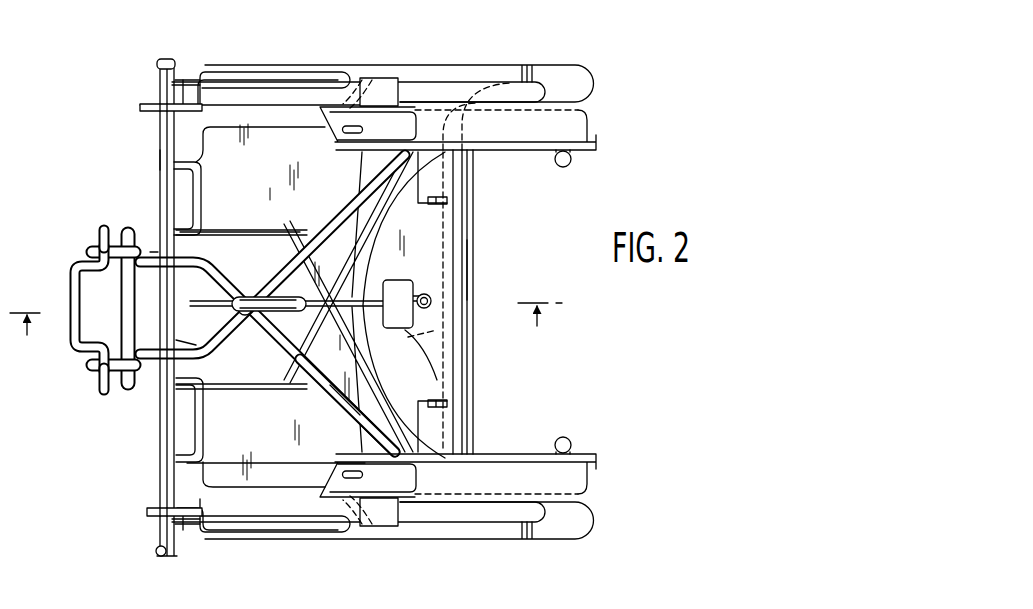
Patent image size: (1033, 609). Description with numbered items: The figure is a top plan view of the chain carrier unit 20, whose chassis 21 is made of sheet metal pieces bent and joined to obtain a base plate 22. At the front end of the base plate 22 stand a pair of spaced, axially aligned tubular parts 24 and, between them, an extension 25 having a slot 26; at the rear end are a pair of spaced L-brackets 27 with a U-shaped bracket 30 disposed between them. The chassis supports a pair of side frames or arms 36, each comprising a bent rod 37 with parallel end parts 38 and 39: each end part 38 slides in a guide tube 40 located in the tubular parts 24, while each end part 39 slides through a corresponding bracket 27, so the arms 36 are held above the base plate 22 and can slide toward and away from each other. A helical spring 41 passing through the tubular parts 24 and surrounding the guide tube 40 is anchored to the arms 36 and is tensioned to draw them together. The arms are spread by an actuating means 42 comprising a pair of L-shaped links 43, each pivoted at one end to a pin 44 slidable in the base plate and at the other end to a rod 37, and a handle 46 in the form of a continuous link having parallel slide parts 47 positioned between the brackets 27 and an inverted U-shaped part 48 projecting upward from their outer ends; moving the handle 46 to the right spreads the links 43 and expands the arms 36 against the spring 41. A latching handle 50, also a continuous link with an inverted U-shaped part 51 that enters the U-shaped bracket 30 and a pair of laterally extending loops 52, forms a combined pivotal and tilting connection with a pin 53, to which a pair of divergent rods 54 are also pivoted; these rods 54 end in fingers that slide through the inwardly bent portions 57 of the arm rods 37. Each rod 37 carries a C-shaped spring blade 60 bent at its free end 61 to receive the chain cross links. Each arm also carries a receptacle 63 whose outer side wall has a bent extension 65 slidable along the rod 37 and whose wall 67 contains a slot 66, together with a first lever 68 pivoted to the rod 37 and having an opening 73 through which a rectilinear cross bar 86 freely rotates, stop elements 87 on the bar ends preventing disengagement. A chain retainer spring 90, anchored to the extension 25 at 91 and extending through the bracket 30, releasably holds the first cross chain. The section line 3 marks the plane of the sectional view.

The section line 3- 3 is at (286, 331).
The chain carrier unit 20 is at (156, 160).
The chassis 21 is at (478, 243).
The base plate 22 is at (217, 462).
The tubular parts 24 is at (474, 436).
The extension 25 is at (403, 352).
The slot 26 is at (388, 282).
The L-brackets 27 is at (203, 419).
The U-shaped bracket 30 is at (192, 345).
The side frames or arms 36 is at (202, 542).
The rod 37 is at (243, 530).
The arm end part 38 is at (478, 318).
The arm end part 39 is at (194, 436).
The guide tube 40 is at (411, 337).
The helical spring 41 is at (447, 409).
The actuating means 42 is at (340, 382).
The L-shaped links 43 is at (387, 395).
The pin 44 is at (366, 277).
The handle 46 is at (228, 233).
The slide parts 47 is at (262, 386).
The inverted U-shaped part 48 is at (129, 314).
The latching handle 50 is at (153, 254).
The inverted U-shaped part 51 is at (69, 277).
The laterally extending loops 52 is at (100, 392).
The pin 53 is at (247, 323).
The divergent rods 54 is at (350, 418).
The inwardly bent portions 57 is at (565, 441).
The C-shaped spring blade 60 is at (443, 539).
The free end 61 is at (541, 537).
The receptacle 63 is at (598, 490).
The bent extension 65 is at (387, 530).
The slot 66 is at (360, 474).
The wall 67 is at (365, 515).
The first lever 68 is at (147, 512).
The opening 73 is at (160, 508).
The cross bar 86 is at (159, 132).
The stop elements 87 is at (156, 551).
The chain retainer spring 90 is at (426, 294).
The anchorage of retainer spring 91 is at (455, 301).